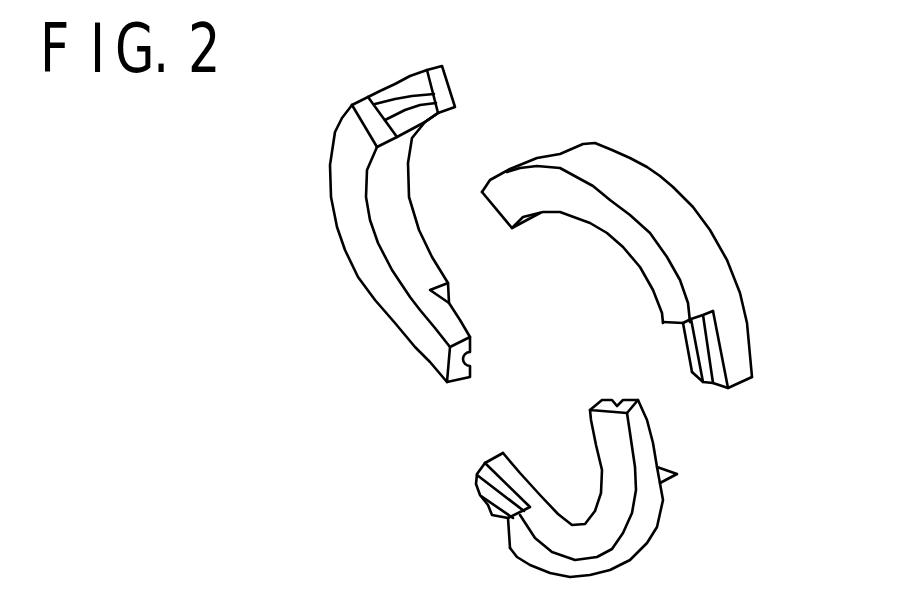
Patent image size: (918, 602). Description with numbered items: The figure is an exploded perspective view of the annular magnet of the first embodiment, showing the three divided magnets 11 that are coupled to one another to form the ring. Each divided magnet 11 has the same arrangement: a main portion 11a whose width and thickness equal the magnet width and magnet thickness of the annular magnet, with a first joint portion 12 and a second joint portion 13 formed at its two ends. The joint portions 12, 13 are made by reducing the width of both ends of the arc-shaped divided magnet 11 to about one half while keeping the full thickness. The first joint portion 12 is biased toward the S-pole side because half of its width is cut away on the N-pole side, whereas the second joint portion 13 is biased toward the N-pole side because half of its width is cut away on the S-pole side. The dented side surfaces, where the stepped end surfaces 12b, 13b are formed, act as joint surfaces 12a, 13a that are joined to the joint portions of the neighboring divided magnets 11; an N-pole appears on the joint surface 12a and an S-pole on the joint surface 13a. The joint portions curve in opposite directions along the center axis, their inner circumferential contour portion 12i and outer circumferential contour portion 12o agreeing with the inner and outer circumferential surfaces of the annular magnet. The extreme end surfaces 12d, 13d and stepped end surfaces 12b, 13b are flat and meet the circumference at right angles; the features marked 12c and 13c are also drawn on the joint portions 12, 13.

The divided magnet 11 is at (509, 346).
The main portion 11a is at (373, 290).
The first joint portion 12 is at (542, 280).
The joint surface 12a is at (397, 85).
The stepped end surface 12b is at (350, 107).
The second layer of end piece 12c is at (367, 90).
The extreme end surface 12d is at (443, 85).
The inner circumferential contour portion 12i is at (445, 116).
The outer circumferential contour portion 12o is at (417, 70).
The second joint portion 13 is at (552, 300).
The joint surface 13a is at (463, 327).
The stepped end surface 13b is at (443, 297).
The groove of end portion 13c is at (470, 355).
The extreme end surface 13d is at (460, 368).